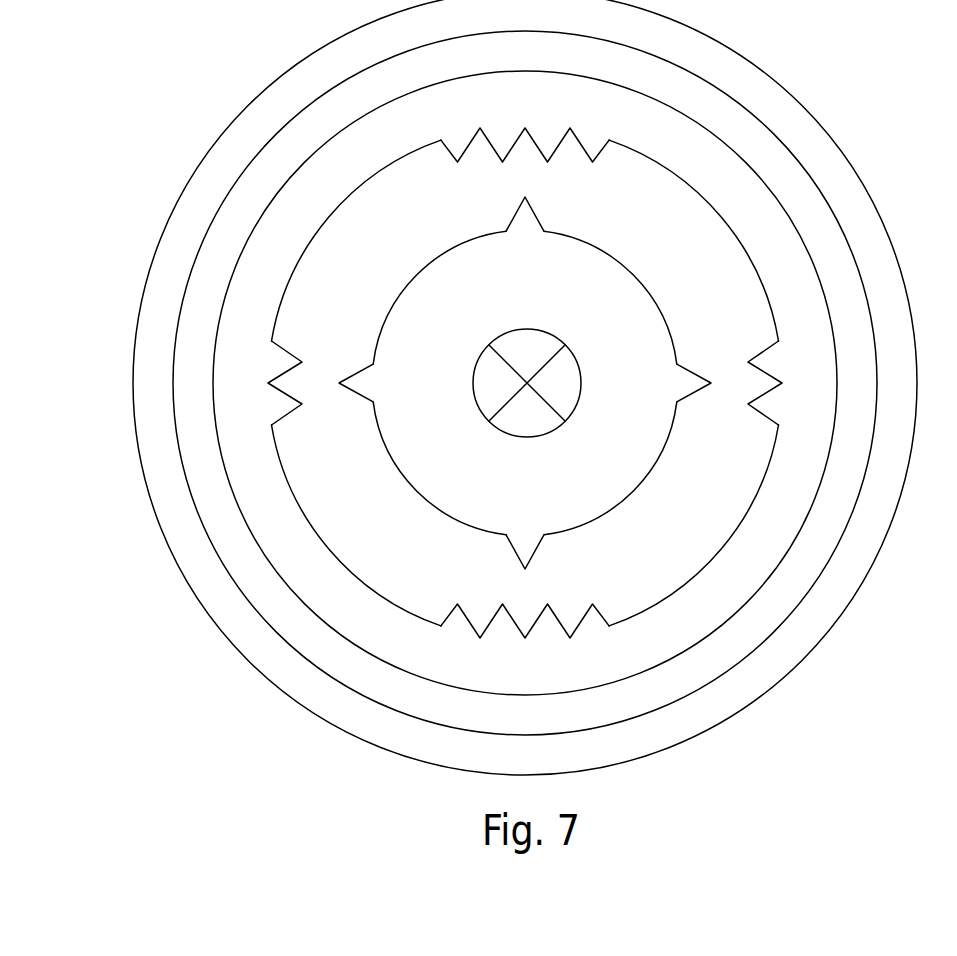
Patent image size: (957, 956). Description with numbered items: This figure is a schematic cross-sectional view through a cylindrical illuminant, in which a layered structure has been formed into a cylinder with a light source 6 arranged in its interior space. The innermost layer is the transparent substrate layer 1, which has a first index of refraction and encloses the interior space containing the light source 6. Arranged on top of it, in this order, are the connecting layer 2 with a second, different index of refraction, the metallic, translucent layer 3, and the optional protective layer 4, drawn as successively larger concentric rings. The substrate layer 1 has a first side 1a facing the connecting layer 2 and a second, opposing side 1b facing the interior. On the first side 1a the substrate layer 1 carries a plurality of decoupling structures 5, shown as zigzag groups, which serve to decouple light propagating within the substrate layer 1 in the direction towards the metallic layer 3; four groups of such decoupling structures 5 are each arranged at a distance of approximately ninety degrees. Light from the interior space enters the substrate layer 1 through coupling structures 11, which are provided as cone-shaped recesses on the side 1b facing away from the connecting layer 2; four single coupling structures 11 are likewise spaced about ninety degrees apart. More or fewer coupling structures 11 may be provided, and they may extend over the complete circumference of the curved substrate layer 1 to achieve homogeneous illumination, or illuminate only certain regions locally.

The substrate layer 1 is at (438, 383).
The first side 1a is at (733, 242).
The second side 1b is at (608, 262).
The connecting layer 2 is at (272, 542).
The metallic, translucent layer 3 is at (283, 622).
The protective layer 4 is at (327, 702).
The decoupling structures 5 is at (440, 148).
The light source 6 is at (485, 388).
The coupling structures 11 is at (553, 545).